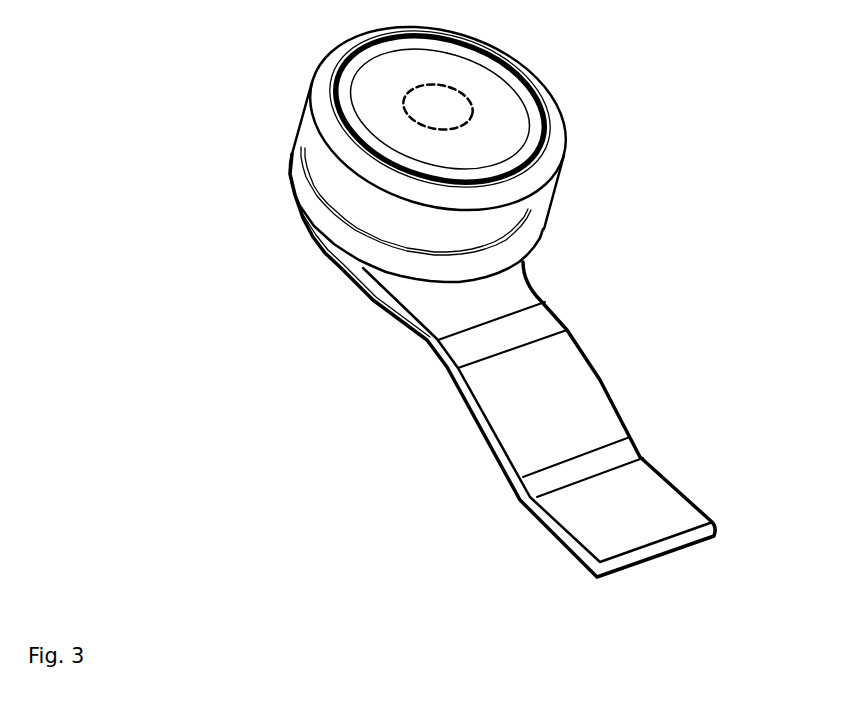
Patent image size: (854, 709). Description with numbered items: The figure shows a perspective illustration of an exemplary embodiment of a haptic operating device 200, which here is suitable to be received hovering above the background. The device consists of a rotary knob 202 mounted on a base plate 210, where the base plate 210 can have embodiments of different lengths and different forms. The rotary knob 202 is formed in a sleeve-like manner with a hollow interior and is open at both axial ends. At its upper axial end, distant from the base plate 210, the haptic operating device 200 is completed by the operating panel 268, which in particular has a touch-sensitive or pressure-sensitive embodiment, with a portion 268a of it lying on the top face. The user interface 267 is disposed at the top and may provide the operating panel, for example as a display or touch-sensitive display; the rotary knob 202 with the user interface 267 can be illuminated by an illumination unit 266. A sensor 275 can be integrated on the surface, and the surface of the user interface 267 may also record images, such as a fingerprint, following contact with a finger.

The haptic operating device 200 is at (147, 64).
The rotary knob 202 is at (530, 197).
The user interface 267 is at (520, 50).
The illumination unit 266 is at (533, 128).
The operating panel 268 is at (487, 117).
The outer portion of top surface 268a is at (383, 122).
The sensor 275 is at (407, 93).
The base plate 210 is at (578, 397).